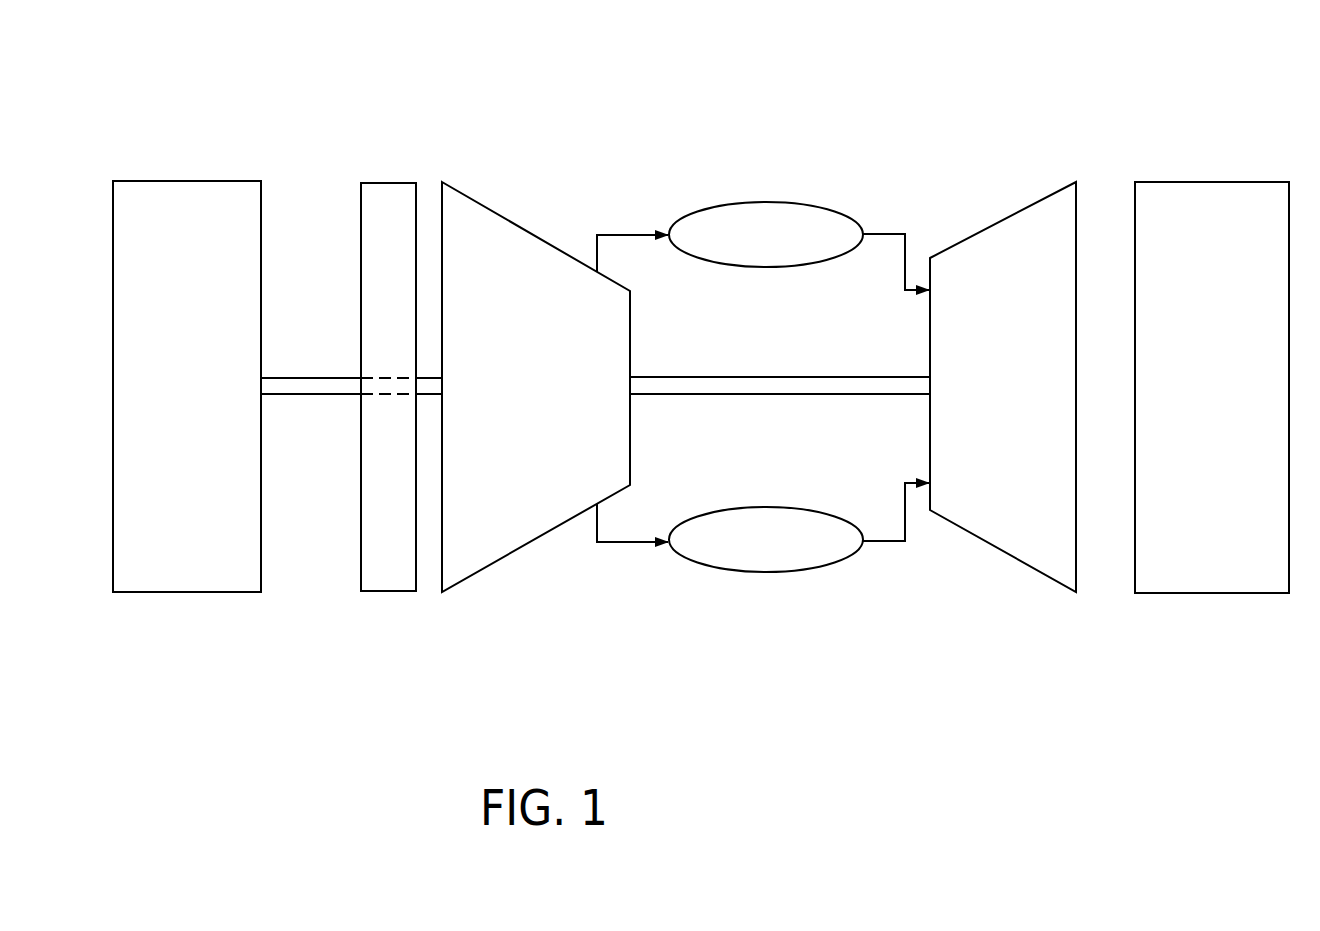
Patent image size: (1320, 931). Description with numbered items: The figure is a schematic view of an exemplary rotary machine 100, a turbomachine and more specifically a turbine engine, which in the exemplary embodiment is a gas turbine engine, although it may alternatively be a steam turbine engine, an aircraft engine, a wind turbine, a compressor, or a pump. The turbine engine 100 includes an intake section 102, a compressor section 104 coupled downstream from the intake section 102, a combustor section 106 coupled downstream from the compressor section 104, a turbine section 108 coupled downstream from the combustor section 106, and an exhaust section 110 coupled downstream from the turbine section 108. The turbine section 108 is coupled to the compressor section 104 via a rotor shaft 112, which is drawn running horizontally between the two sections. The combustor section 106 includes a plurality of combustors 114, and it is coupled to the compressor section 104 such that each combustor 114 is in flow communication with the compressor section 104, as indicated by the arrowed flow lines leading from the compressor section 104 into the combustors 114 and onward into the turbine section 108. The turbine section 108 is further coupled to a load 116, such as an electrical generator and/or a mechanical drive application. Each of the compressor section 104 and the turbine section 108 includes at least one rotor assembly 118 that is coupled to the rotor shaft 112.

The rotary machine 100 is at (912, 110).
The intake section 102 is at (385, 183).
The compressor section 104 is at (468, 195).
The combustor section 106 is at (807, 188).
The turbine section 108 is at (1037, 202).
The exhaust section 110 is at (1209, 182).
The rotor shaft 112 is at (762, 395).
The combustor 114 is at (789, 248).
The load 116 is at (187, 181).
The rotor assembly 118 is at (538, 222).